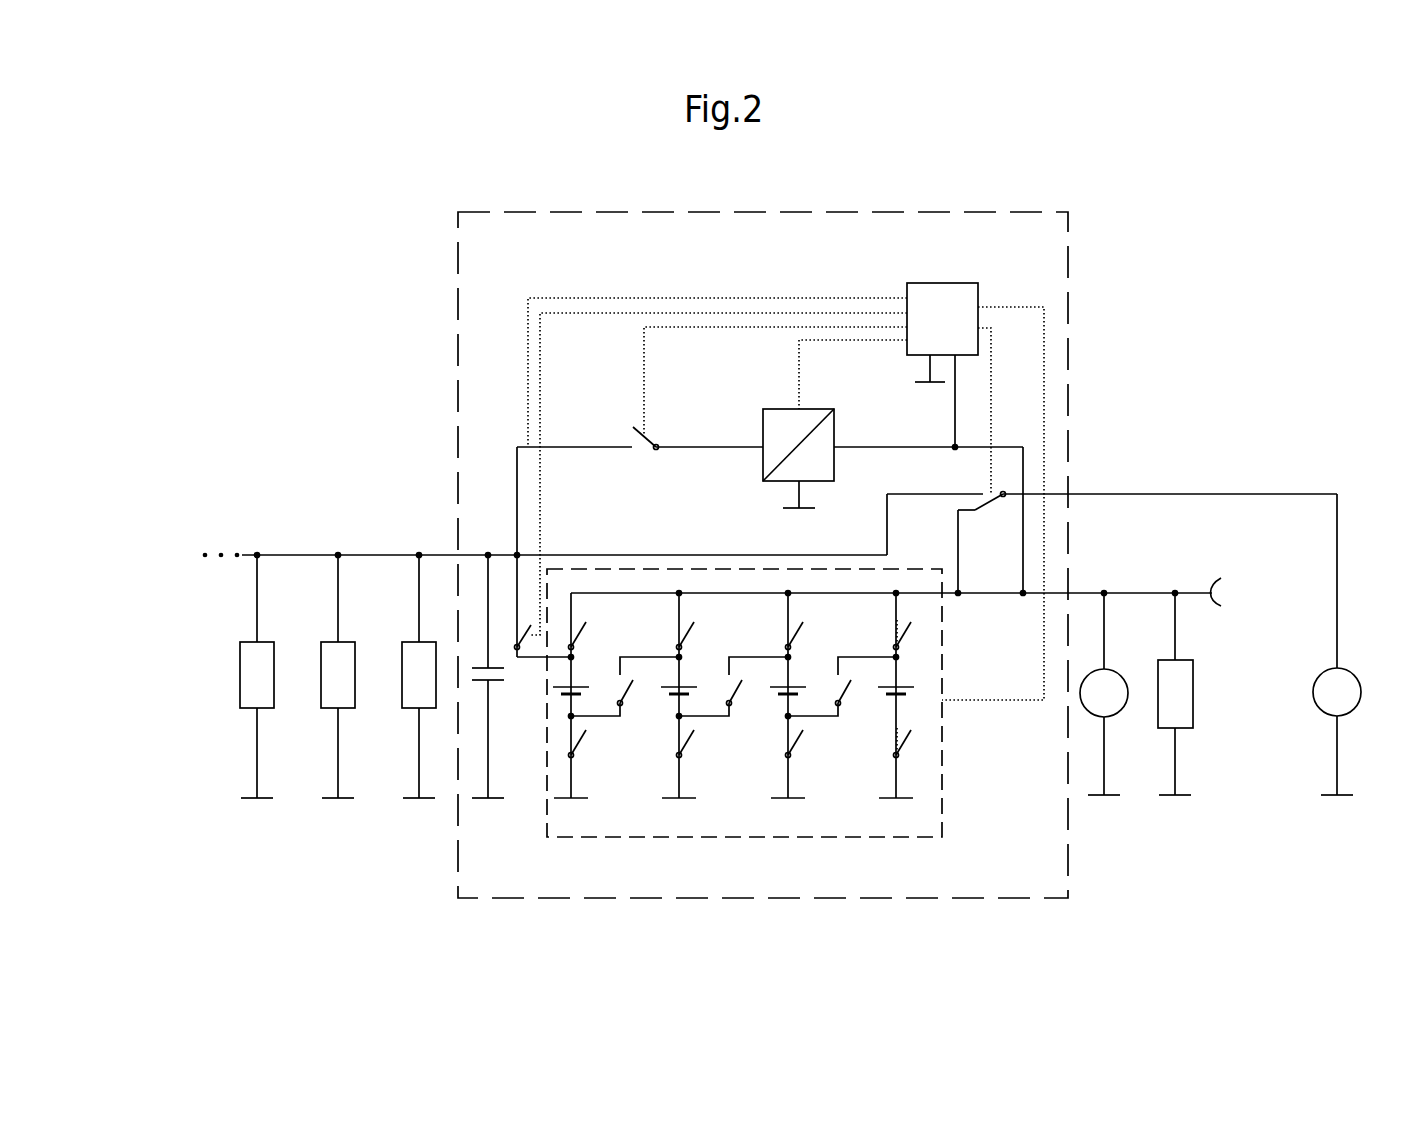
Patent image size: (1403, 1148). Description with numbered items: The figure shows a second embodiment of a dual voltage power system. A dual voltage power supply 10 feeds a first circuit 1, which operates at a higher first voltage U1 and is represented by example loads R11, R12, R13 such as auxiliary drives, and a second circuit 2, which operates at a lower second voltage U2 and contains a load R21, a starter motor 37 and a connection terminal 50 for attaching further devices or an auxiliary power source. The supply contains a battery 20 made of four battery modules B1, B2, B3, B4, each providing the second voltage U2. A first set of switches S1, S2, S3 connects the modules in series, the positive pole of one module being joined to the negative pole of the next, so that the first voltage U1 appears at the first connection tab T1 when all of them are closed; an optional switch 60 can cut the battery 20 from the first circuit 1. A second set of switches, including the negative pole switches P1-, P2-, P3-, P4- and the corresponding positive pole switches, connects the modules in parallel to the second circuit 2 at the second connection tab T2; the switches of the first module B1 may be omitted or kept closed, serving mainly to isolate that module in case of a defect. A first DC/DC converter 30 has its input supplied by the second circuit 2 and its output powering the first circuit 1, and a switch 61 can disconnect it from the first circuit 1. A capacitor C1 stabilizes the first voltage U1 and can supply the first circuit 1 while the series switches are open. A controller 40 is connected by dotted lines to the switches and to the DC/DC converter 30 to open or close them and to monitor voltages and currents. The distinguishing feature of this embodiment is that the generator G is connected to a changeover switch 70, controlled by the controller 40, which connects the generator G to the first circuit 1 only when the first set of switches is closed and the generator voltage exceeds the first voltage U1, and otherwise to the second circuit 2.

The first circuit 1 is at (297, 530).
The second circuit 2 is at (1157, 568).
The dual voltage power supply 10 is at (1068, 268).
The battery 20 is at (745, 837).
The first DC/DC converter 30 is at (763, 450).
The starter motor 37 is at (1124, 710).
The controller 40 is at (943, 283).
The connection terminal 50 is at (1220, 576).
The switch 60 is at (530, 629).
The switch 61 is at (642, 448).
The changeover switch 70 is at (997, 500).
The load R11 is at (238, 676).
The load R12 is at (319, 676).
The load R13 is at (400, 676).
The load R21 is at (1197, 694).
The capacitor C1 is at (482, 676).
The first connection tab T1 is at (526, 660).
The second connection tab T2 is at (952, 597).
The first voltage U1 is at (487, 534).
The second voltage U2 is at (1090, 578).
The first battery module B1 is at (906, 695).
The second battery module B2 is at (798, 695).
The third battery module B3 is at (689, 695).
The fourth battery module B4 is at (581, 695).
The first switch S1 is at (842, 687).
The second switch S2 is at (733, 687).
The third switch S3 is at (625, 687).
The negative pole switch P1- is at (918, 750).
The negative pole switch P2- is at (810, 750).
The negative pole switch P3- is at (701, 750).
The negative pole switch P4- is at (593, 750).
The generator G is at (1337, 731).